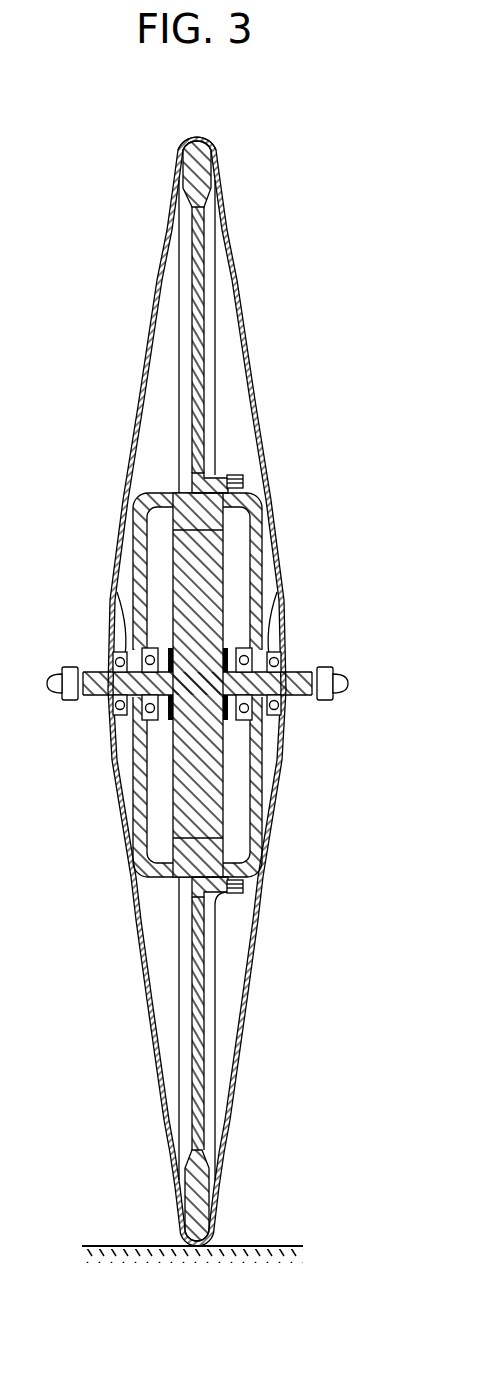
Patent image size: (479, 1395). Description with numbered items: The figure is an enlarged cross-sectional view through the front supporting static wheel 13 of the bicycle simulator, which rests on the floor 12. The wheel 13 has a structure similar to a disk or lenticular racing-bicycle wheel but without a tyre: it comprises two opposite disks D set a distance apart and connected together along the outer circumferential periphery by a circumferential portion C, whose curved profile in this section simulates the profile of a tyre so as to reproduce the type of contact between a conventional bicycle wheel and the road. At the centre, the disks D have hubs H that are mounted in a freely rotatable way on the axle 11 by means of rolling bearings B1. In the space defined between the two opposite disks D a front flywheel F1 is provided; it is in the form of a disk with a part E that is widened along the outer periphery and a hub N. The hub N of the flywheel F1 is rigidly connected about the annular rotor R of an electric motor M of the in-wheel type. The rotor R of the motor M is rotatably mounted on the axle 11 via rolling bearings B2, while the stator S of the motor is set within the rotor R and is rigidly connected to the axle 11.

The front supporting static wheel 13 is at (84, 134).
The circumferential portion C is at (197, 121).
The widened part E is at (196, 172).
The disk D is at (249, 333).
The front flywheel F1 is at (203, 358).
The hub of the flywheel N is at (214, 474).
The rolling bearings B2 is at (257, 547).
The hub H is at (118, 592).
The rolling bearings B1 is at (112, 665).
The axle 11 is at (140, 700).
The stator S is at (205, 765).
The rotor R is at (200, 857).
The electric motor M is at (144, 883).
The floor 12 is at (248, 1245).